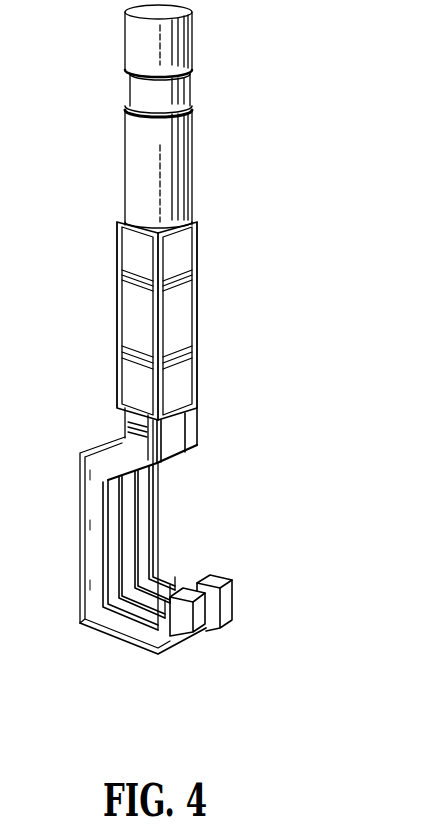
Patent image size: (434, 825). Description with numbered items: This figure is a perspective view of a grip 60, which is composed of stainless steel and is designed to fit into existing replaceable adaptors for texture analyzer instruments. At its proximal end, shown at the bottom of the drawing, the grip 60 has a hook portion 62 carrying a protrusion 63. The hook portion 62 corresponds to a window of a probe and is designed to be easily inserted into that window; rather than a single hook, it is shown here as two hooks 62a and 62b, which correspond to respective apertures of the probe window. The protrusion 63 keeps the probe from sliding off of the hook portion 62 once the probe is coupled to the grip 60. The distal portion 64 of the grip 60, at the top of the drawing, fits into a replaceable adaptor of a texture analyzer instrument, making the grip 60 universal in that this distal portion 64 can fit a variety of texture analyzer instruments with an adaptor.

The grip 60 is at (250, 307).
The hook portion 62 is at (140, 576).
The hook 62a is at (161, 590).
The hook 62b is at (88, 627).
The protrusion 63 is at (236, 574).
The distal portion 64 is at (198, 75).